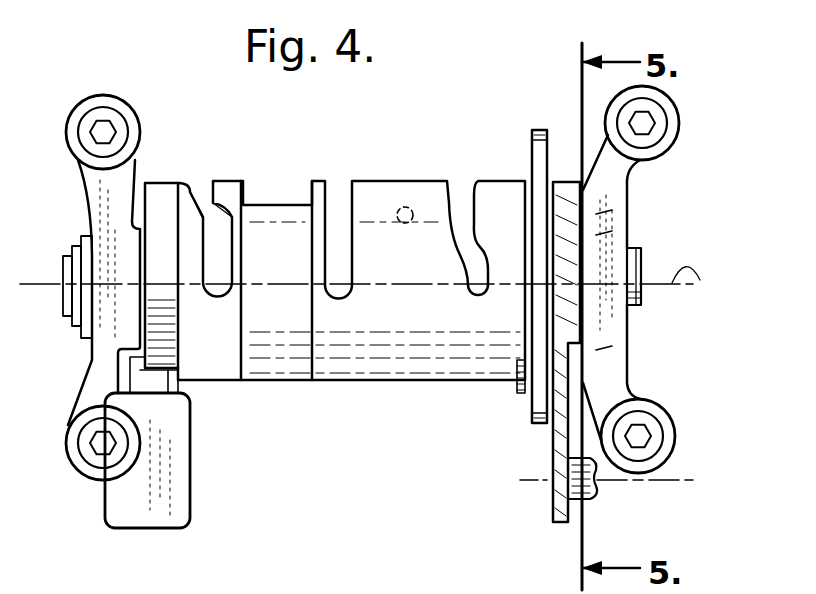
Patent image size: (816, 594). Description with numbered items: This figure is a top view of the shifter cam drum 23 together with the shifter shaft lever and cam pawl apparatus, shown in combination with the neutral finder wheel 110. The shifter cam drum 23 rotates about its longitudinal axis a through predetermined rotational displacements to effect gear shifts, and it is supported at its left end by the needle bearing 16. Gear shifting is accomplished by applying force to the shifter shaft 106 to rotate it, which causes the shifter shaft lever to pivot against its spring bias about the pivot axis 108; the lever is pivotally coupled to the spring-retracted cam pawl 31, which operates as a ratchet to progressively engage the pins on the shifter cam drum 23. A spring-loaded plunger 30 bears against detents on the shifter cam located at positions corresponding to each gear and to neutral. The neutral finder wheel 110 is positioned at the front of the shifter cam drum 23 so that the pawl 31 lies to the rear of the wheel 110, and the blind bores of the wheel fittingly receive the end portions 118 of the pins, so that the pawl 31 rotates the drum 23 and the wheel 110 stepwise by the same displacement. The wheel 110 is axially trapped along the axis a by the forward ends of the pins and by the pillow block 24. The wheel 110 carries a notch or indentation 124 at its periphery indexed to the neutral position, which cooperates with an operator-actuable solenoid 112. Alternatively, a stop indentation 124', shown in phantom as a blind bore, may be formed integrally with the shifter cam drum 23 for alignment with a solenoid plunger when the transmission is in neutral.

The needle bearing, left cam support 16 is at (642, 276).
The shifter cam drum 23 is at (370, 382).
The pillow block 24 is at (658, 279).
The spring-loaded plunger 30 is at (177, 388).
The cam pawl 31 is at (531, 141).
The shifter shaft 106 is at (598, 497).
The pivot axis 108 is at (530, 483).
The neutral finder wheel 110 is at (563, 172).
The solenoid 112 is at (557, 440).
The end portions of the pins 118 is at (651, 232).
The notch or indentation 124 is at (668, 204).
The stop indentation 124' is at (425, 171).
The longitudinal axis a is at (363, 282).